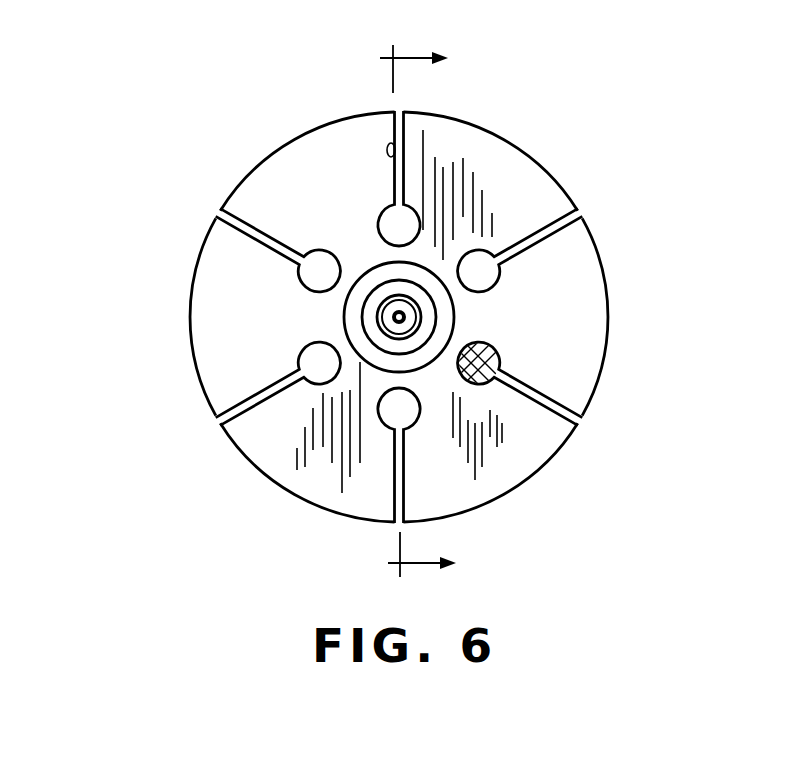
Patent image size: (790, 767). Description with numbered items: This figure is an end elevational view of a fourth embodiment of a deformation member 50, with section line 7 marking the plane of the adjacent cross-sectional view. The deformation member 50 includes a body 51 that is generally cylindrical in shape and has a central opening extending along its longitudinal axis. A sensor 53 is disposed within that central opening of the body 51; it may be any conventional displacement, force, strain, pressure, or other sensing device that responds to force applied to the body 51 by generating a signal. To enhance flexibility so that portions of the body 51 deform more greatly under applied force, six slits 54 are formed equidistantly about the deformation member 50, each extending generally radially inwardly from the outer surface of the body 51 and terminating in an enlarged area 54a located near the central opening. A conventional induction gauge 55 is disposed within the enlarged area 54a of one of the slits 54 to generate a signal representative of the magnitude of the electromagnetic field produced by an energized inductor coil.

The deformation member 50 is at (348, 315).
The body 51 is at (517, 167).
The sensor 53 is at (378, 318).
The slits 54 is at (394, 147).
The enlarged area 54a is at (381, 210).
The induction gauge 55 is at (489, 341).
The section line 7- 7 is at (409, 315).